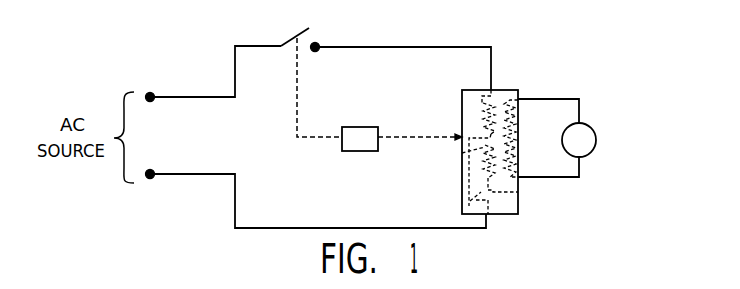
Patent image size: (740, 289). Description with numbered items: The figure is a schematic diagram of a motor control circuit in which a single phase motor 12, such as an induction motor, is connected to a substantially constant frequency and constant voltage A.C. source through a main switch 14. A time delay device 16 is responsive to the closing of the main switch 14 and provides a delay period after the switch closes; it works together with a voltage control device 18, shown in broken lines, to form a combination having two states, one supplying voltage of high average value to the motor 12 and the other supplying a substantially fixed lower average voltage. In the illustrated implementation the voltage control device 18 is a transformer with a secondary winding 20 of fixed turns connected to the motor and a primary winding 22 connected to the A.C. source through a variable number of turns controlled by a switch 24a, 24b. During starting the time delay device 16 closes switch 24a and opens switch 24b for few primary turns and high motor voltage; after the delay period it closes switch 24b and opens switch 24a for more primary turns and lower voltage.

The single phase motor 12 is at (591, 128).
The main switch 14 is at (282, 43).
The time delay device 16 is at (360, 127).
The voltage control device 18 is at (500, 90).
The secondary winding 20 is at (517, 127).
The primary winding 22 is at (462, 153).
The switch 24a is at (462, 200).
The switch 24b is at (518, 192).